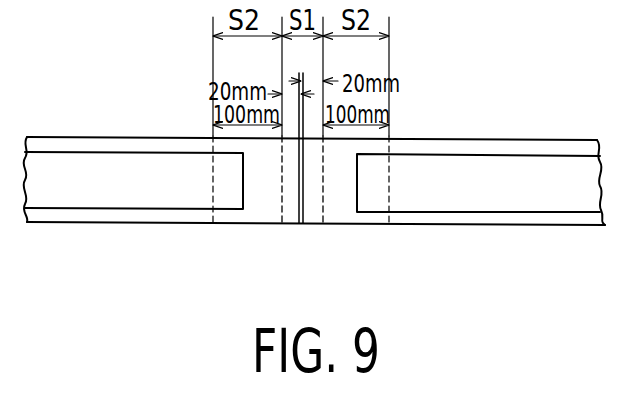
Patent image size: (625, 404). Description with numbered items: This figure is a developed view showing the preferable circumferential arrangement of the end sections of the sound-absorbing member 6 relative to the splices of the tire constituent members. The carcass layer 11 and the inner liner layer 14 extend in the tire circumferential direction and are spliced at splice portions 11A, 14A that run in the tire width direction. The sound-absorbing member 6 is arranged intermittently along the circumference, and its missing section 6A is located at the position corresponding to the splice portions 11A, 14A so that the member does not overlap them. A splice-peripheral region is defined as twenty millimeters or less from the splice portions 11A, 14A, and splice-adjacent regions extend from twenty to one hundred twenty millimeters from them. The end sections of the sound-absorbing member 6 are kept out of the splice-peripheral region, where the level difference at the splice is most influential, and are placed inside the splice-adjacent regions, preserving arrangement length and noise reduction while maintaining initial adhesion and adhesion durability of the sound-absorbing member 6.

The sound-absorbing member 6 is at (120, 192).
The missing section 6A is at (258, 190).
The carcass layer 11 is at (314, 148).
The inner liner layer 14 is at (507, 150).
The splice portion 11A is at (341, 182).
The splice portion 14A is at (303, 200).